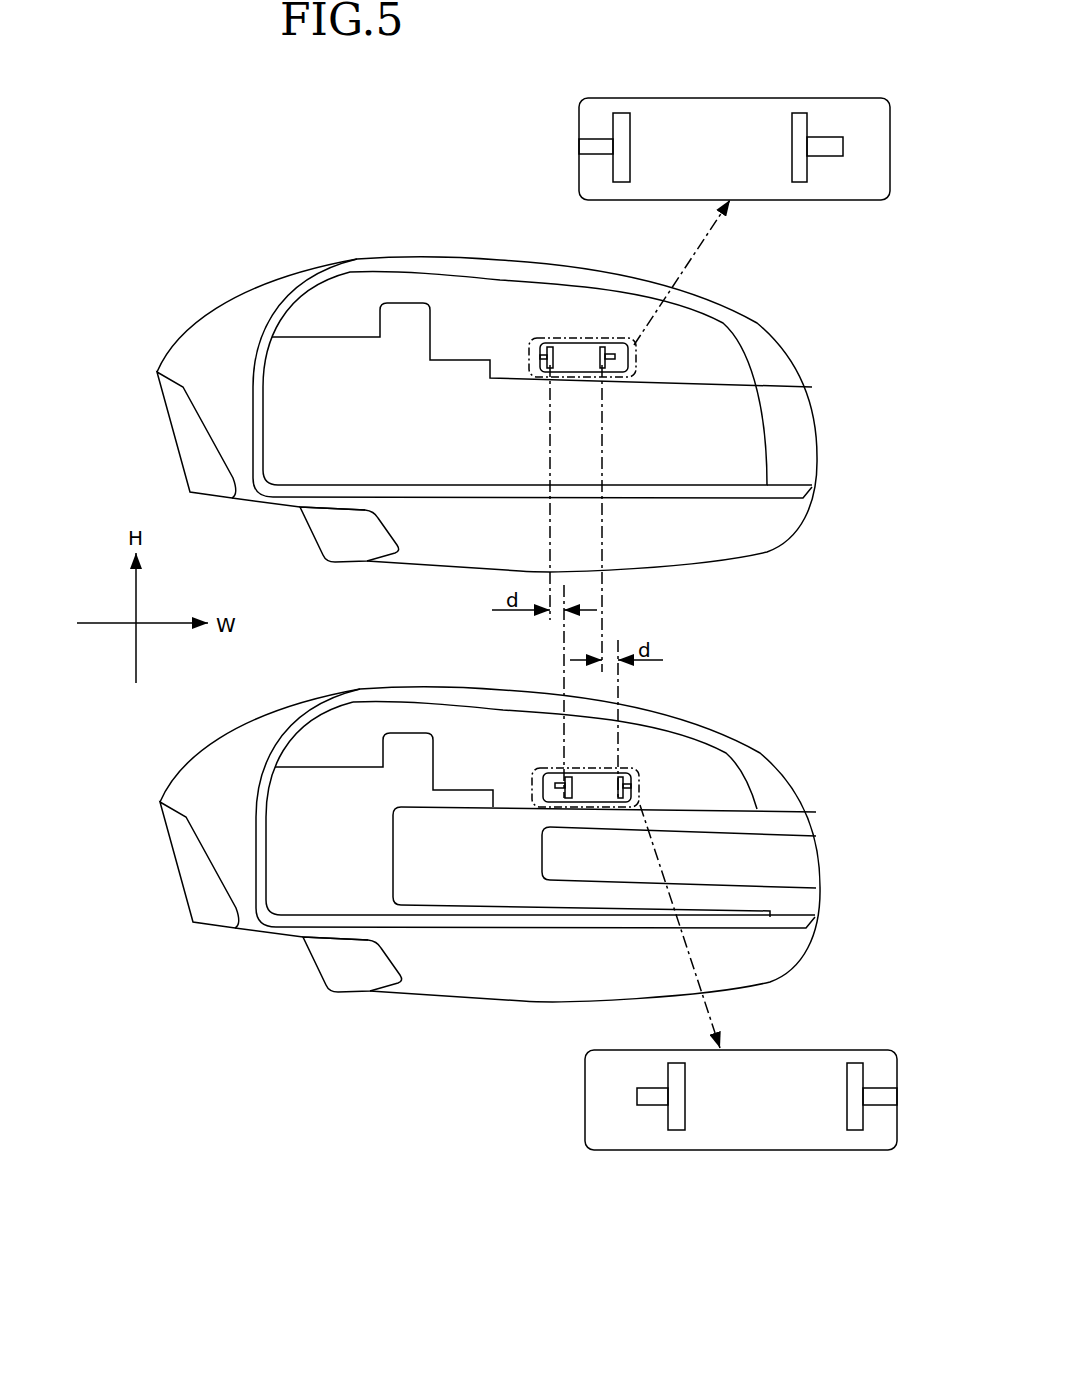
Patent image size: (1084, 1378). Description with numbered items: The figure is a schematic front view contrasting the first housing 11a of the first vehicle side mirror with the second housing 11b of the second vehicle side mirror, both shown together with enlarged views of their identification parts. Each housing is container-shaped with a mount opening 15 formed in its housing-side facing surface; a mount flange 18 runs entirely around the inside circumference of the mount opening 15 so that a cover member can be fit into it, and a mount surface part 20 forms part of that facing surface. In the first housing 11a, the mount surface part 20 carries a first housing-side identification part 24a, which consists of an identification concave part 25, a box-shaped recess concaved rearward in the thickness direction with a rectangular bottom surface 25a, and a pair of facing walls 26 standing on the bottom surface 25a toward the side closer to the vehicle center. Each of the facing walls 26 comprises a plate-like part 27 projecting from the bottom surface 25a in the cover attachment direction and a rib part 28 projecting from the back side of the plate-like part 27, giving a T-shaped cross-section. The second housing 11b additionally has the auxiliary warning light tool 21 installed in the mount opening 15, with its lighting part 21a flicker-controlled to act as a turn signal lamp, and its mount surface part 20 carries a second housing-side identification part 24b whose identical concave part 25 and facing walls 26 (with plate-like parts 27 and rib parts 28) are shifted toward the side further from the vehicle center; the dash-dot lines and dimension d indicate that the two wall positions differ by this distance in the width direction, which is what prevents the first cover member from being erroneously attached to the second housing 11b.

The first housing 11a is at (317, 237).
The second housing 11b is at (321, 667).
The mount opening 15 is at (461, 273).
The mount flange 18 is at (371, 490).
The mount surface part 20 is at (533, 325).
The auxiliary warning light tool 21 is at (795, 831).
The lighting part 21a is at (797, 867).
The first housing-side identification part 24a is at (643, 356).
The second housing-side identification part 24b is at (643, 783).
The identification concave part 25 is at (730, 98).
The bottom surface 25a is at (758, 154).
The pair of facing walls 26 is at (727, 624).
The plate-like part 27 is at (618, 112).
The rib part 28 is at (630, 55).